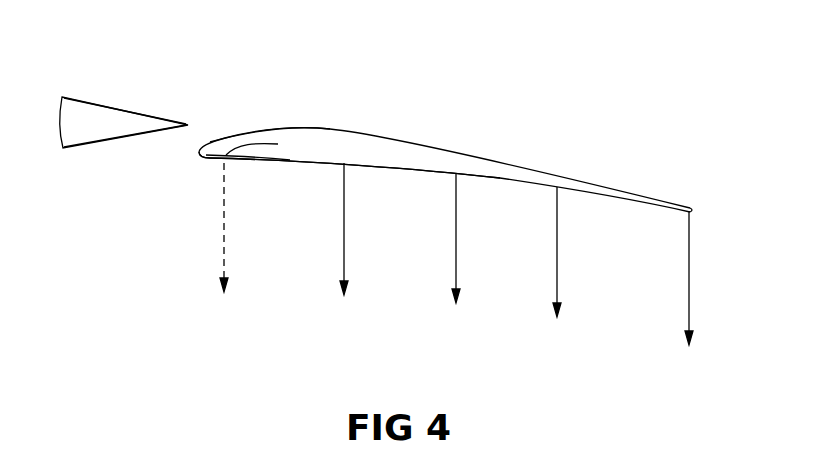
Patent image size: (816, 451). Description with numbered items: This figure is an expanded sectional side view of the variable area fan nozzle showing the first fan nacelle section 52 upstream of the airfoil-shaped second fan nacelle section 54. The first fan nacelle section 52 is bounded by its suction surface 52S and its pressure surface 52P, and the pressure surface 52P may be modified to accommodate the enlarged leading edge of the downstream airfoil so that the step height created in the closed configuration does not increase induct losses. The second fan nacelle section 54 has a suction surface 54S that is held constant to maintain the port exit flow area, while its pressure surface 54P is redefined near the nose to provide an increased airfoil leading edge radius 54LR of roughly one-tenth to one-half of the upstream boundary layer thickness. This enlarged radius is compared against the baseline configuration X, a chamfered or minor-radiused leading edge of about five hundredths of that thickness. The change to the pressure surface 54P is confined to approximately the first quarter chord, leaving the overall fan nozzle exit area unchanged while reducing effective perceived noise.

The first fan nacelle section 52 is at (105, 88).
The suction surface of first fan nacelle section 52S is at (127, 110).
The pressure surface of first fan nacelle section 52P is at (82, 147).
The second fan nacelle section 54 is at (418, 130).
The suction surface 54S is at (238, 138).
The pressure surface 54P is at (243, 163).
The leading edge radius 54LR is at (203, 157).
The baseline configuration X is at (259, 147).